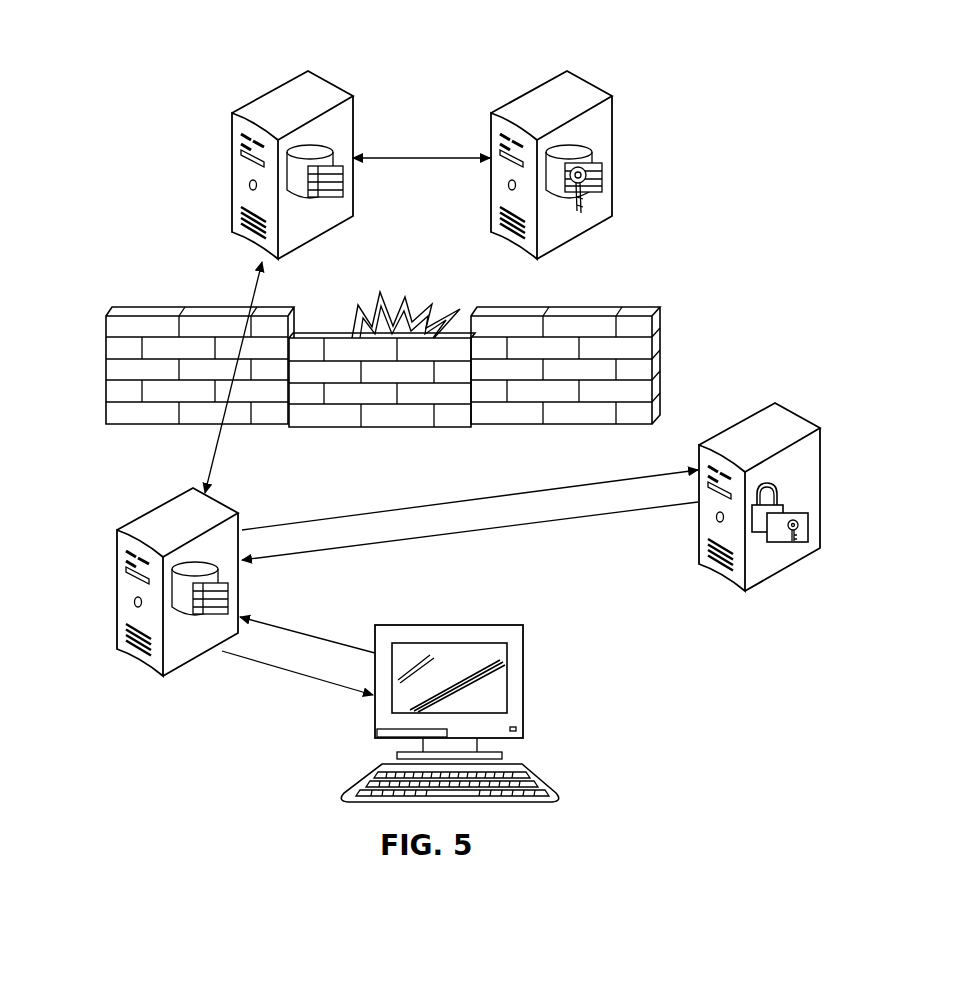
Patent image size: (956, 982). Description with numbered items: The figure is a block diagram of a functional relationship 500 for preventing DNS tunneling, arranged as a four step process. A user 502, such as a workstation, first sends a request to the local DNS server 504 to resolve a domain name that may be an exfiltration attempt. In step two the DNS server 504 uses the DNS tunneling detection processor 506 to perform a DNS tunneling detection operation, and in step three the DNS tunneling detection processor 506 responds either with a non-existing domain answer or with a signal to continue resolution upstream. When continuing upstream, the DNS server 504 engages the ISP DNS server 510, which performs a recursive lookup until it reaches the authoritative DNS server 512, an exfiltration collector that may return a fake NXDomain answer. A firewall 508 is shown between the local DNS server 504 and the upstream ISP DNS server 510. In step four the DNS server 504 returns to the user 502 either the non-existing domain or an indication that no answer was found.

The DNS tunneling detection system 500 is at (86, 50).
The user 502 is at (524, 651).
The DNS server 504 is at (117, 548).
The DNS tunneling detection processor 506 is at (699, 446).
The firewall 508 is at (105, 326).
The ISP DNS server 510 is at (251, 101).
The authoritative DNS server 512 is at (510, 101).